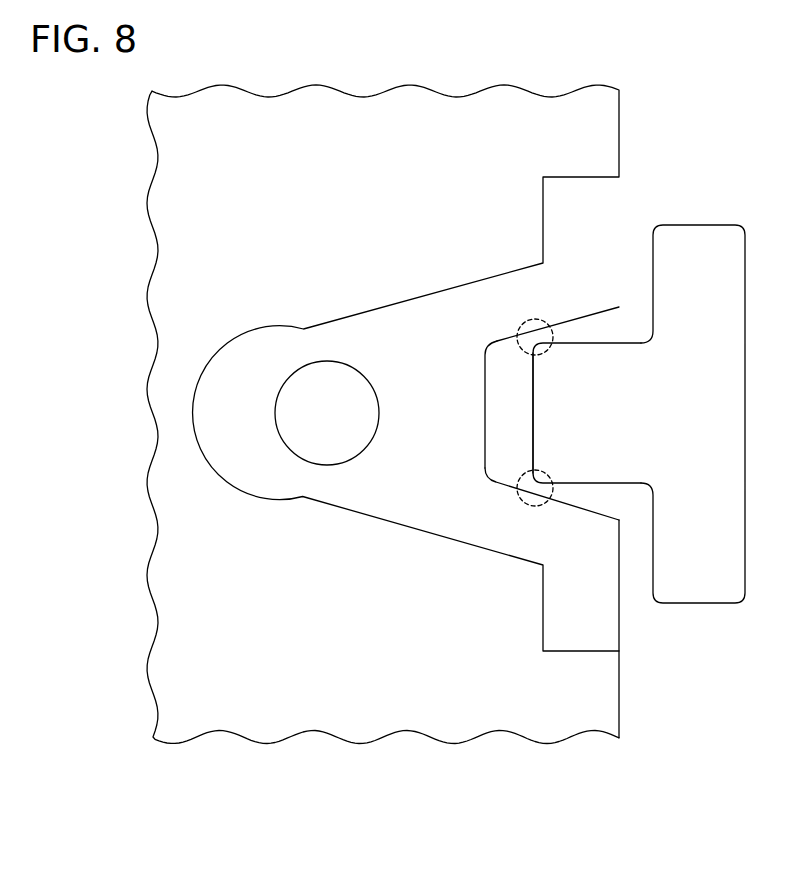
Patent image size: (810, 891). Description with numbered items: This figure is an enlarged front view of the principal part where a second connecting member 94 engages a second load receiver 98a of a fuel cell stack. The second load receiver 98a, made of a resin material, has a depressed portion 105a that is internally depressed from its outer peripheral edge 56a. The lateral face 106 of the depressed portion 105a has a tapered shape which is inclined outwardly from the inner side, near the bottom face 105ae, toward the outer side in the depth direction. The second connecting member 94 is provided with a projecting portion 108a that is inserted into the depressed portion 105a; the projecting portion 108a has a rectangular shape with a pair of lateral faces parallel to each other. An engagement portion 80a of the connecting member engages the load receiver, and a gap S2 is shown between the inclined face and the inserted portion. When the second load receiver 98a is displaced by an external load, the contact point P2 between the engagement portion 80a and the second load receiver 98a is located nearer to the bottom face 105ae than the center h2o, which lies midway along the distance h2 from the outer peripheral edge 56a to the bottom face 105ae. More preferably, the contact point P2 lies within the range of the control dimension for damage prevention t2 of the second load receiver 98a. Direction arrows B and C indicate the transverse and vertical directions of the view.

The second load receiver 98a is at (417, 536).
The depressed portion 105a is at (500, 369).
The bottom face 105ae is at (483, 398).
The lateral face 106 is at (488, 480).
The projecting portion 108a is at (547, 423).
The outer peripheral edge 56a is at (621, 693).
The engagement portion 80a is at (632, 514).
The second connecting member 94 is at (699, 215).
The contact point P2 is at (542, 355).
The gap S2 is at (563, 303).
The control dimension for damage prevention t2 is at (545, 343).
The distance h2 is at (483, 622).
The center h2o is at (552, 605).
The vertical direction C is at (687, 662).
The width direction B is at (410, 789).